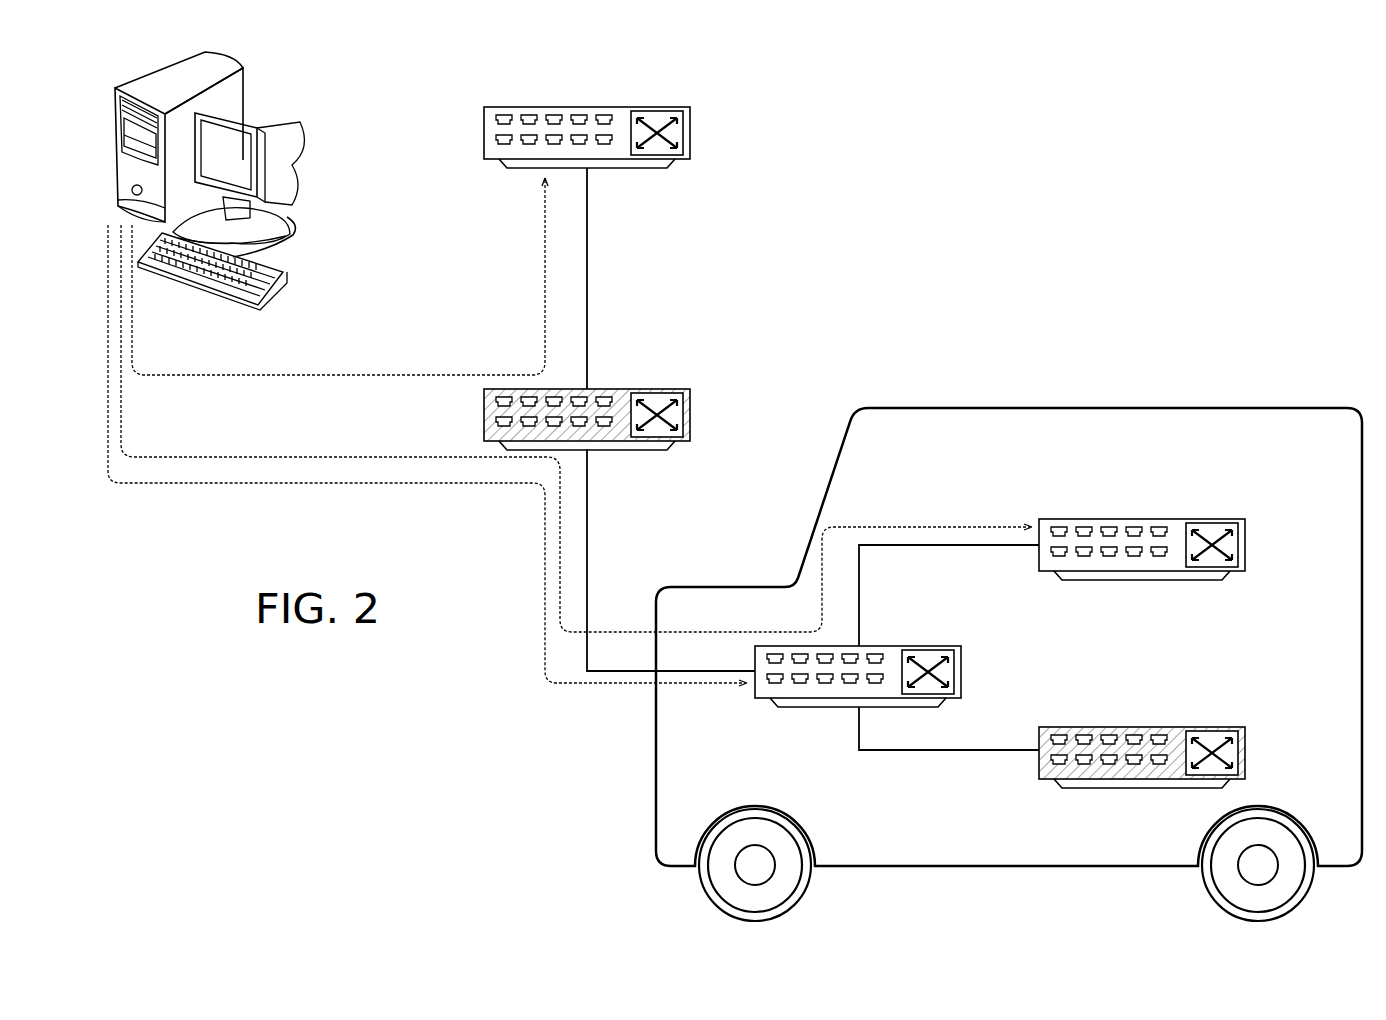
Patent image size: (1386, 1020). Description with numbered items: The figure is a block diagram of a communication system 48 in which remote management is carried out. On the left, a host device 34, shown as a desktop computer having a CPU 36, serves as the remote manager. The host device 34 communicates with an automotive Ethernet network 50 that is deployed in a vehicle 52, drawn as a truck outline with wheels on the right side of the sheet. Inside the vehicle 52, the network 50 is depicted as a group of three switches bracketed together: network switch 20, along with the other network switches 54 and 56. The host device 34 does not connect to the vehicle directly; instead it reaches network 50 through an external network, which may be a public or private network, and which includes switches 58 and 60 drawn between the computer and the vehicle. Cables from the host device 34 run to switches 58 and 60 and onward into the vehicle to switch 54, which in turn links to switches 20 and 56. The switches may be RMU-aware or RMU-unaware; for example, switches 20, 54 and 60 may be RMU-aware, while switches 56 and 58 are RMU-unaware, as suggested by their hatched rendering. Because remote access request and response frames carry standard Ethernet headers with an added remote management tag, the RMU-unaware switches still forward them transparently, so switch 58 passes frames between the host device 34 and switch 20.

The network switch 20 is at (1114, 519).
The host device 34 is at (325, 55).
The CPU 36 is at (238, 66).
The communication system 48 is at (1058, 178).
The automotive Ethernet network 50 is at (1262, 516).
The vehicle 52 is at (1028, 408).
The network switch 54 is at (894, 646).
The network switch 56 is at (1144, 727).
The switch 58 is at (611, 389).
The switch 60 is at (580, 107).